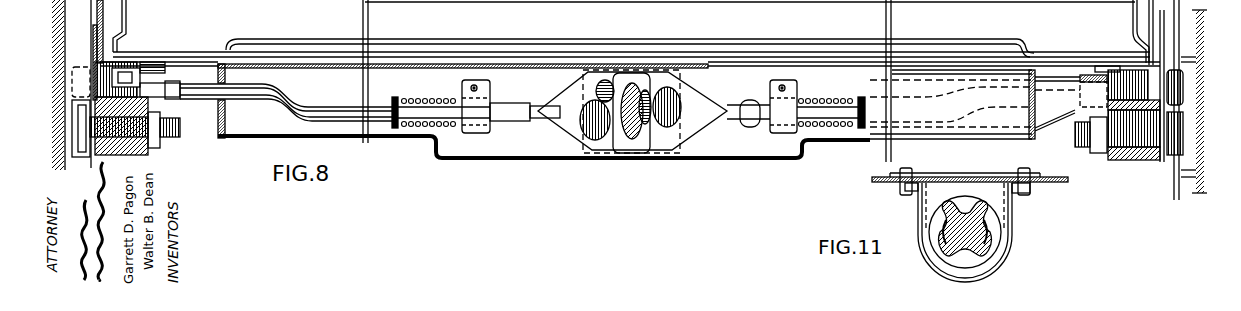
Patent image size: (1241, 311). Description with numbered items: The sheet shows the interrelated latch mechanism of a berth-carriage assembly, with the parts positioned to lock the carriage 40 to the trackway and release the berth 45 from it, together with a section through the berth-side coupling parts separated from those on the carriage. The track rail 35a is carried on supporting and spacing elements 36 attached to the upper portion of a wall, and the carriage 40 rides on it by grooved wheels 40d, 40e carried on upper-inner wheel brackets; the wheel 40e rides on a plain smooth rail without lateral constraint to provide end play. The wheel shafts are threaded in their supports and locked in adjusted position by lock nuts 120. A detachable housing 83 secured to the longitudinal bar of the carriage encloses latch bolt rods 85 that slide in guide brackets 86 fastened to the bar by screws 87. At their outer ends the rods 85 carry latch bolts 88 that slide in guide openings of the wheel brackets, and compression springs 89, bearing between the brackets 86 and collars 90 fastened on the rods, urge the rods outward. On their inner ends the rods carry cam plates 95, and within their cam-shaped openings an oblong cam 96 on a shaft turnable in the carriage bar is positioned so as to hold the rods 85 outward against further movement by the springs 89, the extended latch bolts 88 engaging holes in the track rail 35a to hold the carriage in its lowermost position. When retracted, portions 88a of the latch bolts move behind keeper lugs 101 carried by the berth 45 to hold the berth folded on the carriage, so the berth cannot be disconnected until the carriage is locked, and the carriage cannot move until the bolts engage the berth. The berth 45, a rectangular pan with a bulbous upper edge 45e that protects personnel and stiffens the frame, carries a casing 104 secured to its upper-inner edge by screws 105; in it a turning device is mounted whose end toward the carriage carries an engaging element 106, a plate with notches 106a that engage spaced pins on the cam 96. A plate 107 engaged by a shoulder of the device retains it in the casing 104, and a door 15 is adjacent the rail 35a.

In FIG. 8, the door 15 is at (1190, 3).
In FIG. 8, the track rail 35a is at (88, 20).
In FIG. 8, the supporting and spacing elements 36 is at (1190, 60).
In FIG. 8, the carriage 40 is at (430, 145).
In FIG. 8, the wheel 40d is at (1180, 128).
In FIG. 8, the wheel 40e is at (76, 138).
In FIG. 11, the berth 45 is at (1063, 183).
In FIG. 8, the bulbous upper edge 45e is at (718, 48).
In FIG. 8, the housing 83 is at (236, 138).
In FIG. 8, the latch bolt rod 85 is at (300, 106).
In FIG. 8, the guide bracket 86 is at (478, 132).
In FIG. 8, the screw 87 is at (478, 88).
In FIG. 8, the latch bolt 88 is at (104, 70).
In FIG. 8, the latch bolt portion 88a is at (128, 67).
In FIG. 8, the compression spring 89 is at (420, 98).
In FIG. 8, the collar 90 is at (392, 101).
In FIG. 8, the cam plate 95 is at (562, 88).
In FIG. 8, the oblong cam 96 is at (625, 145).
In FIG. 8, the keeper lug 101 is at (165, 72).
In FIG. 8, the casing 104 is at (682, 83).
In FIG. 11, the casing 104 is at (1012, 222).
In FIG. 11, the screw 105 is at (1028, 194).
In FIG. 8, the engaging element 106 is at (605, 122).
In FIG. 11, the engaging element 106 is at (975, 266).
In FIG. 11, the notch 106a is at (950, 234).
In FIG. 11, the plate 107 is at (990, 236).
In FIG. 8, the lock nut 120 is at (156, 150).